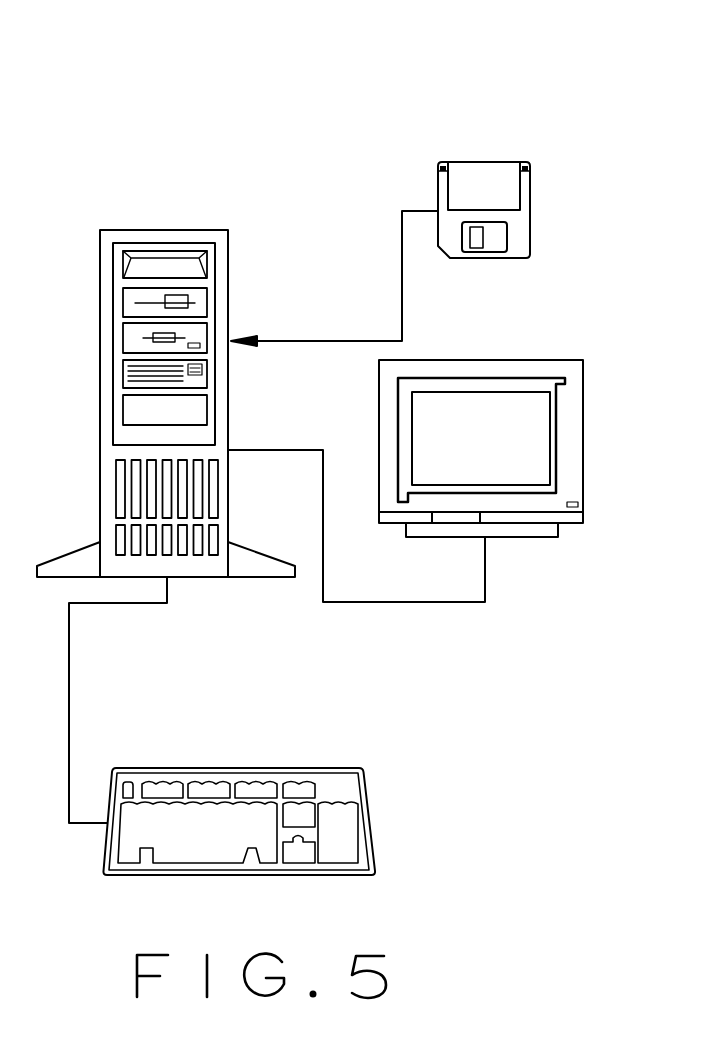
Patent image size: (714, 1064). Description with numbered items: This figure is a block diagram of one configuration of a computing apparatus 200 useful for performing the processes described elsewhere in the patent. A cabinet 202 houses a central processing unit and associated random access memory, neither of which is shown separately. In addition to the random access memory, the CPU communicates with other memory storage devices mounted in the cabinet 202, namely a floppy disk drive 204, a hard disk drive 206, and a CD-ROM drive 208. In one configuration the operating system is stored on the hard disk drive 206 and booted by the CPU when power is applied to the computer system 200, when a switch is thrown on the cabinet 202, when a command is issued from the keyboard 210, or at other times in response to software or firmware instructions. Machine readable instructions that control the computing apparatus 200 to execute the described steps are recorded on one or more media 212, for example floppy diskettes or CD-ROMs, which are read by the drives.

The computing apparatus 200 is at (340, 130).
The cabinet 202 is at (160, 230).
The floppy disk drive 204 is at (207, 333).
The hard disk drive 206 is at (208, 375).
The CD-ROM drive 208 is at (215, 413).
The keyboard 210 is at (372, 831).
The media 212 is at (532, 215).